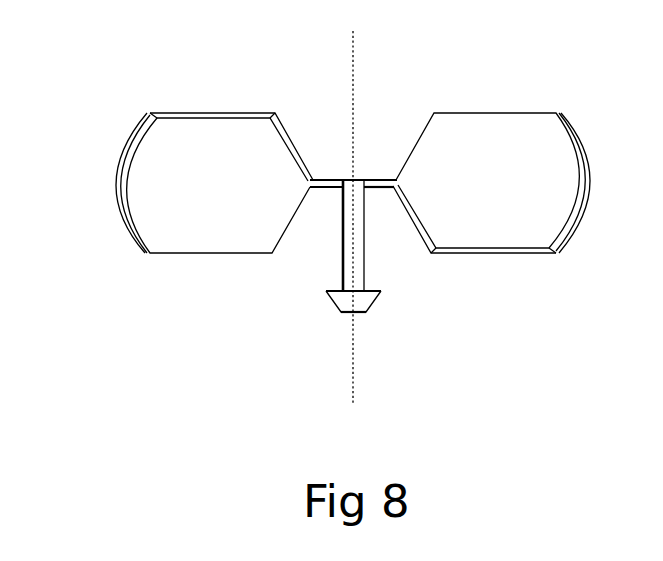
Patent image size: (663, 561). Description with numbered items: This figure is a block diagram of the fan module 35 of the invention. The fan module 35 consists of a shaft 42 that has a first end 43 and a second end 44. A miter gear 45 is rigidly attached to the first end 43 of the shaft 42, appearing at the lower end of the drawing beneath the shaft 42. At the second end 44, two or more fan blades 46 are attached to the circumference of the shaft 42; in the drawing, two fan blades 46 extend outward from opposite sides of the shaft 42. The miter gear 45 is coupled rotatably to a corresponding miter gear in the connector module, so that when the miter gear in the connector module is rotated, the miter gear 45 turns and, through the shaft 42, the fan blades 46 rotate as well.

The fan module 35 is at (450, 217).
The shaft 42 is at (275, 245).
The first end 43 is at (310, 327).
The second end 44 is at (311, 131).
The miter gear 45 is at (415, 339).
The fan blades 46 is at (324, 158).